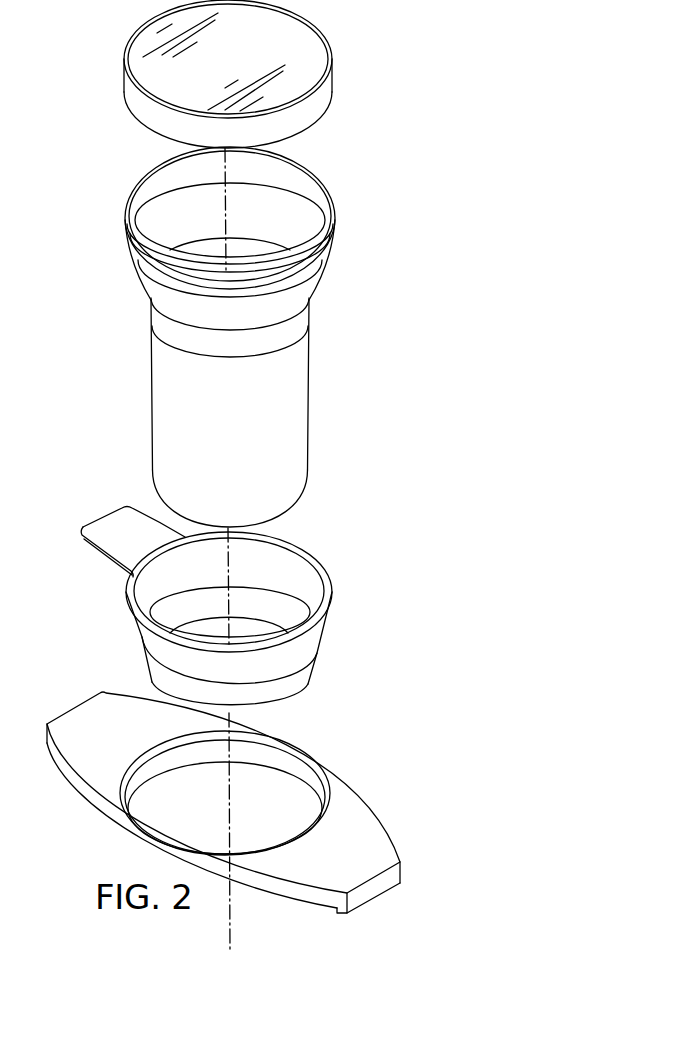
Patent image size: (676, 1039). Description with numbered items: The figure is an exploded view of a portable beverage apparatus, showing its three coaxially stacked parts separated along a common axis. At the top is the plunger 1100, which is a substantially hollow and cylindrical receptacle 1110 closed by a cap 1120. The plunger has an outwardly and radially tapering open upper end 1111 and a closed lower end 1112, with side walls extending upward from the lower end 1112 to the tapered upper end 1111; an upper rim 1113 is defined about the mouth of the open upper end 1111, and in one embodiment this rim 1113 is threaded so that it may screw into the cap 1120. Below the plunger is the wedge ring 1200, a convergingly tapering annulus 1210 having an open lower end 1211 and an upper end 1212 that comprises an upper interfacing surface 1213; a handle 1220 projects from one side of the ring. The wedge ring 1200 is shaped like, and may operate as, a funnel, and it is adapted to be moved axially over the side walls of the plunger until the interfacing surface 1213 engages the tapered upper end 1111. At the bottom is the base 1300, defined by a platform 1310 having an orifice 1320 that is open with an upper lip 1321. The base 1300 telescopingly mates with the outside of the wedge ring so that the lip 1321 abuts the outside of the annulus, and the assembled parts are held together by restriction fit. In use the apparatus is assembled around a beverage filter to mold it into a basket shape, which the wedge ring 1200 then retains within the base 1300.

The plunger 1100 is at (220, 333).
The receptacle 1110 is at (271, 255).
The open upper end 1111 is at (152, 284).
The closed lower end 1112 is at (163, 498).
The upper rim 1113 is at (319, 181).
The cap 1120 is at (233, 68).
The wedge ring 1200 is at (230, 606).
The annulus 1210 is at (312, 636).
The open lower end 1211 is at (172, 691).
The upper end 1212 is at (322, 567).
The upper interfacing surface 1213 is at (262, 566).
The handle 1220 is at (130, 540).
The base 1300 is at (224, 802).
The platform 1310 is at (72, 740).
The orifice 1320 is at (285, 793).
The upper lip 1321 is at (330, 805).